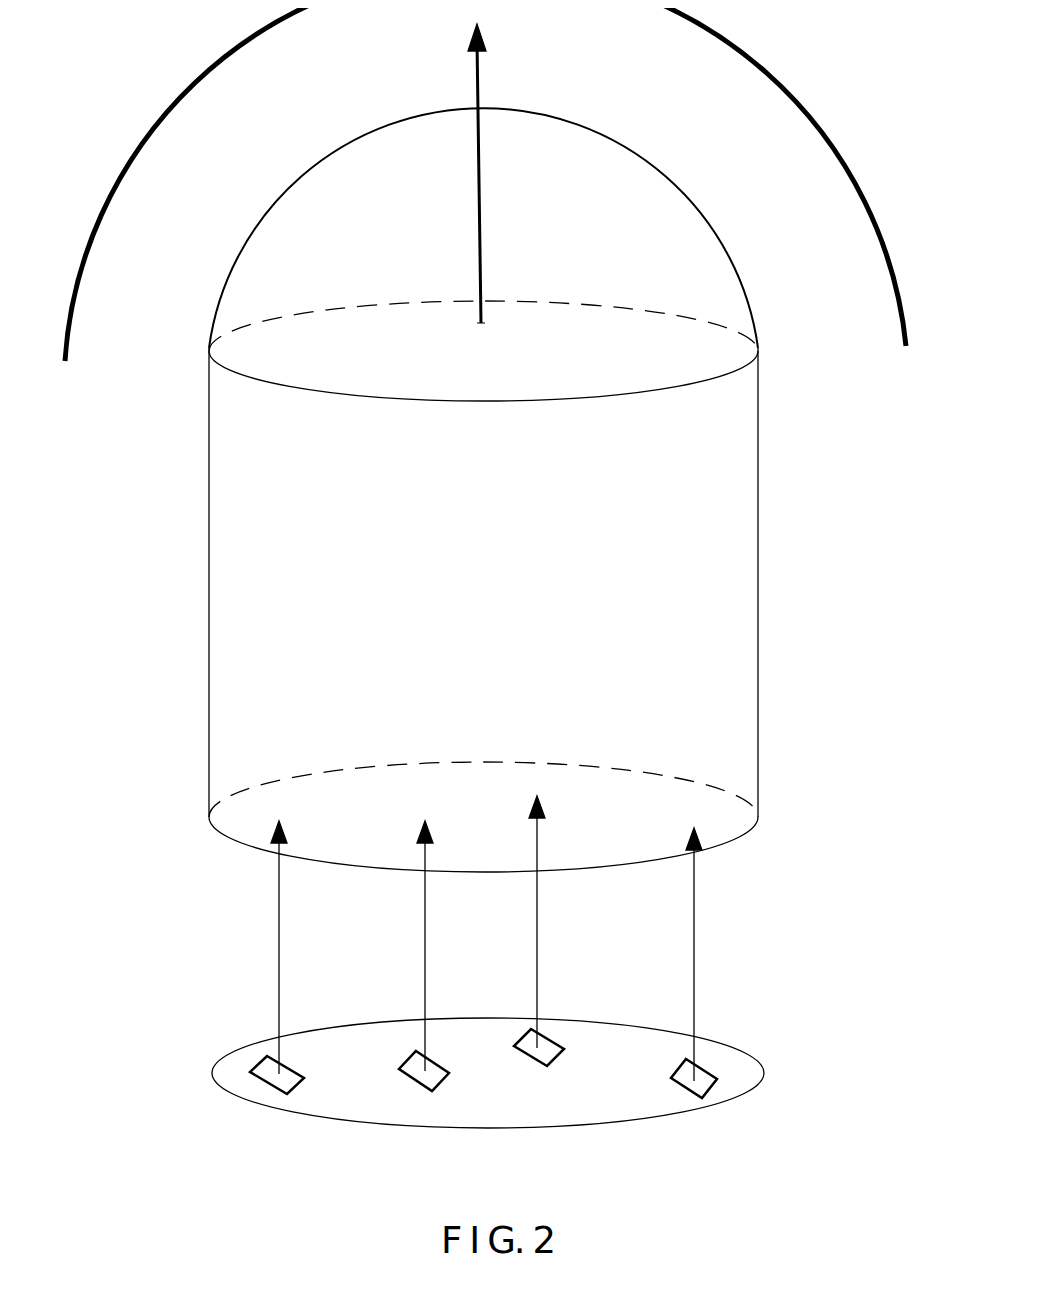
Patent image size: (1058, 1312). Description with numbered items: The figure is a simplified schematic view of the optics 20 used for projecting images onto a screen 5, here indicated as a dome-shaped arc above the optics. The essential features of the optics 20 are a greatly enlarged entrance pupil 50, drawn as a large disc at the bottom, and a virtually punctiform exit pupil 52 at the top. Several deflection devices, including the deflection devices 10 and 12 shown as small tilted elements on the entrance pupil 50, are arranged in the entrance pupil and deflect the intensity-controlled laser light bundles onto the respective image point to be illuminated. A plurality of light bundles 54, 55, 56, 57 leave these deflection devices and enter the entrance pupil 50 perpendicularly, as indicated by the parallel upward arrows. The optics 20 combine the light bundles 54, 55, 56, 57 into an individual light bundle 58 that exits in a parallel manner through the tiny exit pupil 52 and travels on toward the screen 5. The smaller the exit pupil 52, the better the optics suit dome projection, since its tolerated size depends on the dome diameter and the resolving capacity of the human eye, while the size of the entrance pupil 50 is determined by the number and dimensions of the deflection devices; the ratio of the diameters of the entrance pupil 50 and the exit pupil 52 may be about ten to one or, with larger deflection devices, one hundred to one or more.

The screen 5 is at (730, 34).
The optics 20 is at (737, 570).
The individual light bundle 58 is at (482, 155).
The exit pupil 52 is at (483, 313).
The light bundle 54 is at (280, 972).
The light bundle 55 is at (426, 943).
The light bundle 56 is at (540, 920).
The light bundle 57 is at (697, 942).
The entrance pupil 50 is at (743, 1067).
The deflection device 10 is at (442, 1072).
The deflection device 12 is at (557, 1052).